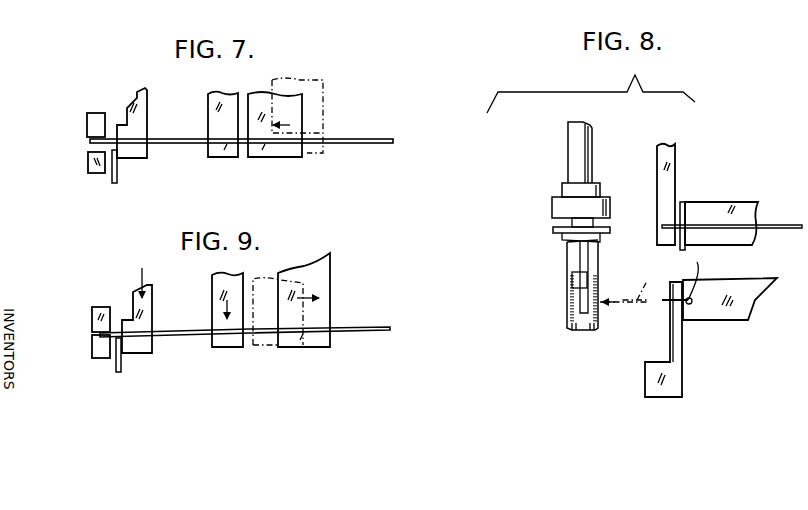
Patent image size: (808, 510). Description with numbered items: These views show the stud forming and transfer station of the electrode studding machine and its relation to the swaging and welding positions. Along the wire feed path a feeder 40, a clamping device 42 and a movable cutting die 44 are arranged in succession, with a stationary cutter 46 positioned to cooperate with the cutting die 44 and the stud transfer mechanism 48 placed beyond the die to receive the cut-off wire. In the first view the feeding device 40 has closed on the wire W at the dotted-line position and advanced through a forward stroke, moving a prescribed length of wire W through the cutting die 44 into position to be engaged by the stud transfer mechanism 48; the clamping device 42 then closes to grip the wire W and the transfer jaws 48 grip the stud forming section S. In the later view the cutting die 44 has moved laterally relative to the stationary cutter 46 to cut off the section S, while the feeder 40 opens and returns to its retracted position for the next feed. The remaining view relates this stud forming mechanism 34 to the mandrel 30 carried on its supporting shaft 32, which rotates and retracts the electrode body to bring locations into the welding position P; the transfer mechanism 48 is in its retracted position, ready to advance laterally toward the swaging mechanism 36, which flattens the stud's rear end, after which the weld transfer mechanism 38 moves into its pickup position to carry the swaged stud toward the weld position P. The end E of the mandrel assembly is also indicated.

In FIG. 8, the mandrel 30 is at (571, 279).
In FIG. 8, the supporting shaft 32 is at (589, 141).
In FIG. 7, the stud forming mechanism 34 is at (359, 111).
In FIG. 9, the stud forming mechanism 34 is at (358, 293).
In FIG. 8, the swaging mechanism 36 is at (748, 322).
In FIG. 8, the weld transfer mechanism 38 is at (672, 398).
In FIG. 7, the feeder 40 is at (283, 100).
In FIG. 9, the feeder 40 is at (285, 290).
In FIG. 7, the clamping device 42 is at (224, 93).
In FIG. 9, the clamping device 42 is at (212, 275).
In FIG. 7, the movable cutting die 44 is at (143, 104).
In FIG. 9, the movable cutting die 44 is at (148, 315).
In FIG. 8, the movable cutting die 44 is at (745, 204).
In FIG. 7, the stationary cutter 46 is at (117, 181).
In FIG. 9, the stationary cutter 46 is at (118, 373).
In FIG. 8, the stationary cutter 46 is at (686, 212).
In FIG. 7, the stud transfer mechanism 48 is at (88, 156).
In FIG. 9, the stud transfer mechanism 48 is at (92, 316).
In FIG. 8, the stud transfer mechanism 48 is at (658, 160).
In FIG. 7, the wire W is at (390, 139).
In FIG. 9, the wire W is at (380, 327).
In FIG. 8, the wire W is at (796, 225).
In FIG. 9, the stud forming section S is at (76, 350).
In FIG. 8, the stud forming section S is at (672, 313).
In FIG. 8, the welding position P is at (625, 286).
In FIG. 8, the tool end E is at (575, 326).